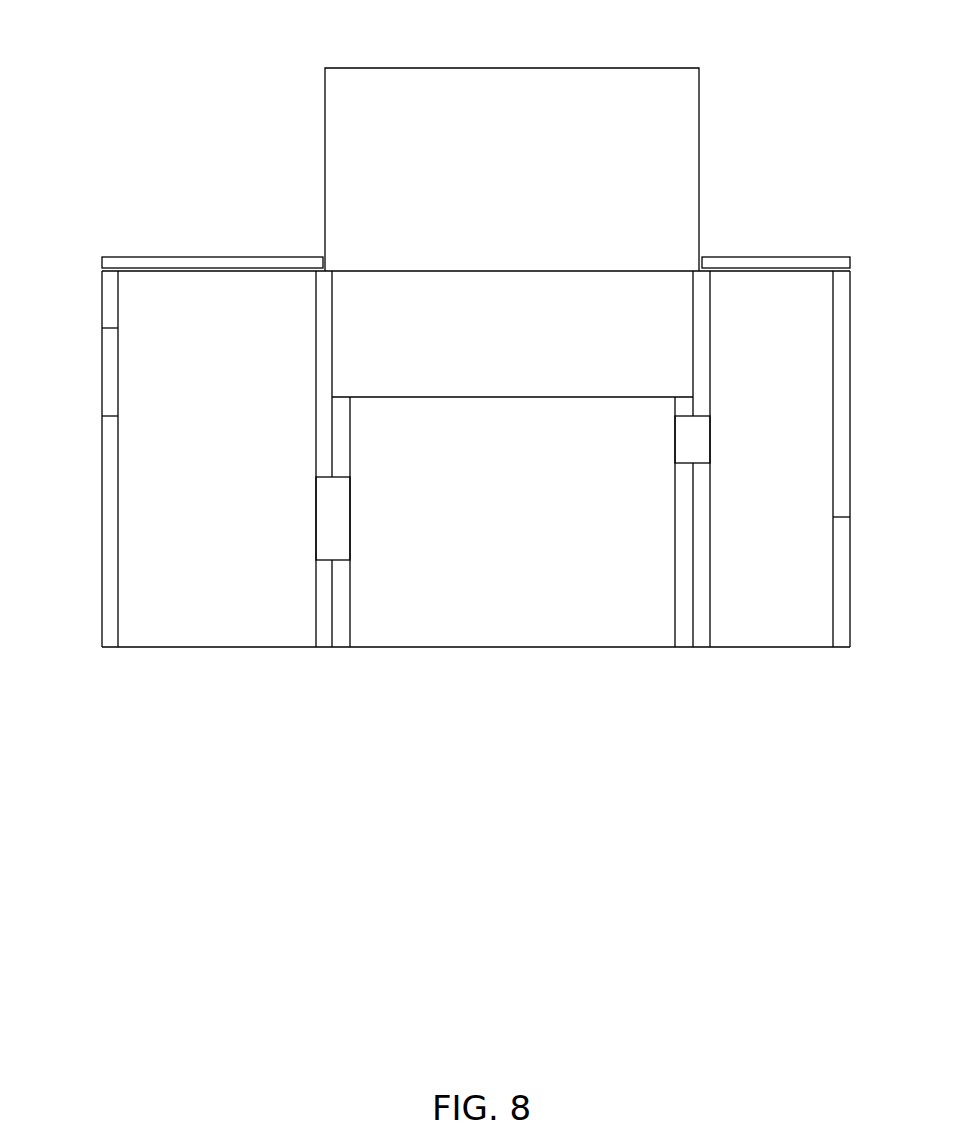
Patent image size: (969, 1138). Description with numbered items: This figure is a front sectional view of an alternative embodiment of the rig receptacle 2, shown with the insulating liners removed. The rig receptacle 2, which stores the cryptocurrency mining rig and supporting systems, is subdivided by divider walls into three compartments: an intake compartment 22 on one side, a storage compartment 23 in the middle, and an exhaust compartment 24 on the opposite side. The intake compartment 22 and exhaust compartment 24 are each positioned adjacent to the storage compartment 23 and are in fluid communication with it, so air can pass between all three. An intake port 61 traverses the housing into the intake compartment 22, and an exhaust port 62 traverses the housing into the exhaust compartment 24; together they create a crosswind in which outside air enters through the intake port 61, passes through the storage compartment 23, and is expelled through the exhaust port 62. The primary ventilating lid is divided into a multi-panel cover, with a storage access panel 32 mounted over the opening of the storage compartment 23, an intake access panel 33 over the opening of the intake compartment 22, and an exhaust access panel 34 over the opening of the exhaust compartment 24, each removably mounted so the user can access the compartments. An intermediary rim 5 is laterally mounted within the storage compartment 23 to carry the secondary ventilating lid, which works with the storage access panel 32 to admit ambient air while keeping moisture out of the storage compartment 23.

The rig receptacle 2 is at (511, 289).
The intermediary rim 5 is at (340, 392).
The intake compartment 22 is at (773, 482).
The storage compartment 23 is at (506, 555).
The exhaust compartment 24 is at (222, 485).
The storage access panel 32 is at (676, 76).
The intake access panel 33 is at (823, 262).
The exhaust access panel 34 is at (124, 262).
The intake port 61 is at (813, 597).
The exhaust port 62 is at (133, 372).